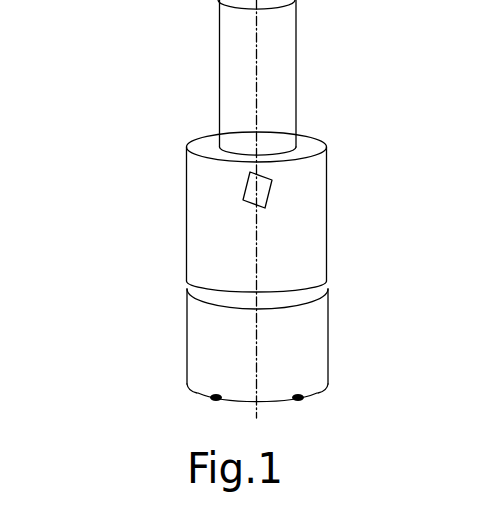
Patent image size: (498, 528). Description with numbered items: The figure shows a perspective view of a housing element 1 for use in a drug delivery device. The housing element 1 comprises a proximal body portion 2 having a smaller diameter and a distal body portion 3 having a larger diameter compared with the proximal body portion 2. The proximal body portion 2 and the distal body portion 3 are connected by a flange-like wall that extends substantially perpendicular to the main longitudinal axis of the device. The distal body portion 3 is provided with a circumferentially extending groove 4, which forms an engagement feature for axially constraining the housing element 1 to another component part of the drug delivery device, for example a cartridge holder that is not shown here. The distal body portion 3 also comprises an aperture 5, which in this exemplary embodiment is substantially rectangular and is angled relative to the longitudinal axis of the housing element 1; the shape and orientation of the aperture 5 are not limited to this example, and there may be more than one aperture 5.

The housing element 1 is at (208, 209).
The proximal body portion 2 is at (281, 88).
The distal body portion 3 is at (310, 228).
The groove 4 is at (190, 287).
The aperture 5 is at (245, 193).